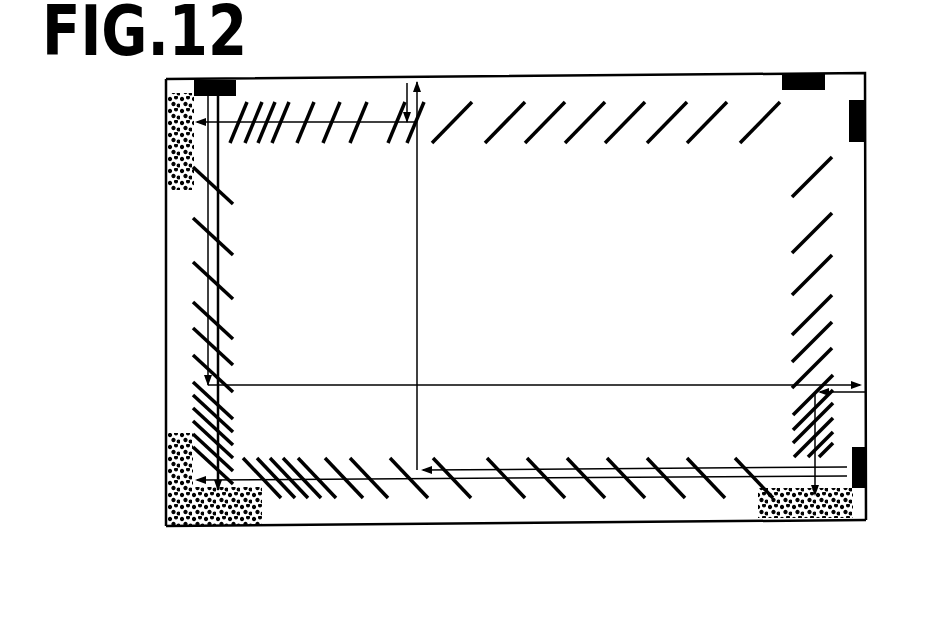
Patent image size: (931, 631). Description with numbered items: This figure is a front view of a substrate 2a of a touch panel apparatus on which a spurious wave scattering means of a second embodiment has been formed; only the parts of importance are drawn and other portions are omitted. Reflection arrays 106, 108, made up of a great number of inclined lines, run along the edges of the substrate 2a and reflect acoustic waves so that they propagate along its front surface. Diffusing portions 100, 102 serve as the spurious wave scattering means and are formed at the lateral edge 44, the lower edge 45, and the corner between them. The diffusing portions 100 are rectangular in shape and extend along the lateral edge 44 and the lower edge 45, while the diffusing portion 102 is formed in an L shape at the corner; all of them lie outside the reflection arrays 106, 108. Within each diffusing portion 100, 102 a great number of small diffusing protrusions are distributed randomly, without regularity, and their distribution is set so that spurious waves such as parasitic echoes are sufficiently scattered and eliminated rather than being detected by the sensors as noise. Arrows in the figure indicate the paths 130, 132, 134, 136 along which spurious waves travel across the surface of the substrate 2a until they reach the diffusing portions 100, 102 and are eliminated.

The substrate 2a is at (523, 300).
The lateral edge 44 is at (166, 240).
The lower edge 45 is at (540, 523).
The diffusing portion 100 is at (160, 162).
The diffusing portion 102 is at (158, 494).
The reflection array 106 is at (243, 325).
The reflection array 108 is at (458, 446).
The path 130 is at (208, 287).
The path 132 is at (195, 455).
The path 134 is at (358, 125).
The path 136 is at (498, 478).